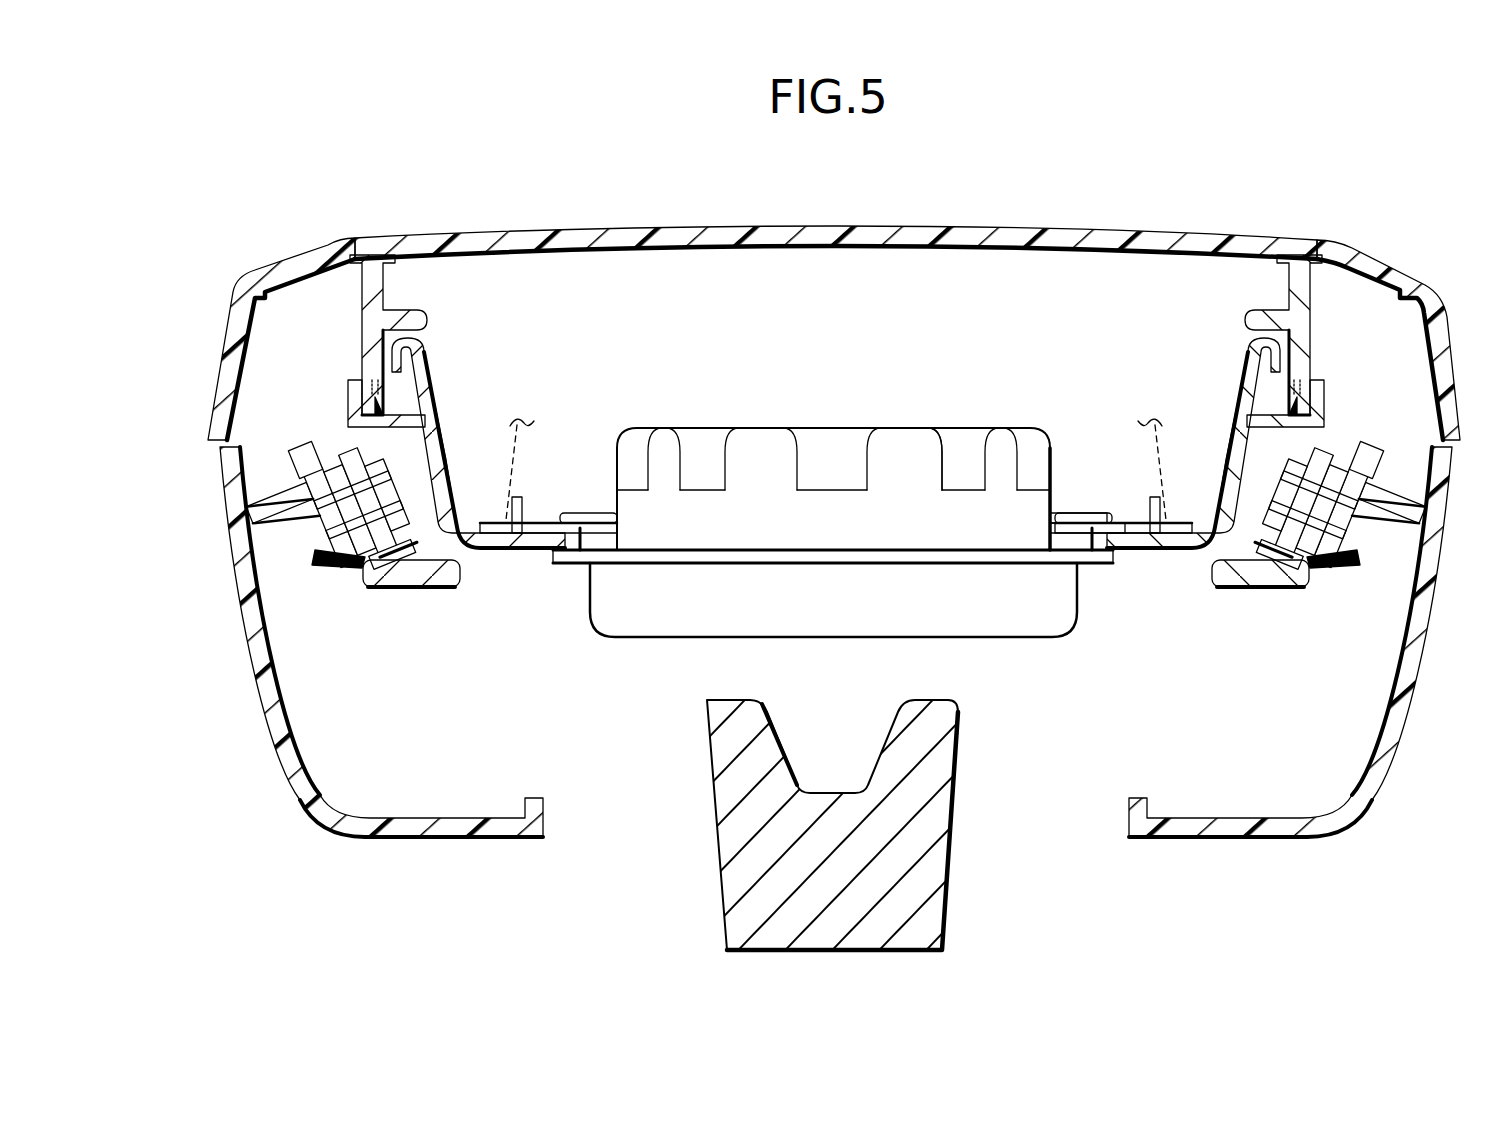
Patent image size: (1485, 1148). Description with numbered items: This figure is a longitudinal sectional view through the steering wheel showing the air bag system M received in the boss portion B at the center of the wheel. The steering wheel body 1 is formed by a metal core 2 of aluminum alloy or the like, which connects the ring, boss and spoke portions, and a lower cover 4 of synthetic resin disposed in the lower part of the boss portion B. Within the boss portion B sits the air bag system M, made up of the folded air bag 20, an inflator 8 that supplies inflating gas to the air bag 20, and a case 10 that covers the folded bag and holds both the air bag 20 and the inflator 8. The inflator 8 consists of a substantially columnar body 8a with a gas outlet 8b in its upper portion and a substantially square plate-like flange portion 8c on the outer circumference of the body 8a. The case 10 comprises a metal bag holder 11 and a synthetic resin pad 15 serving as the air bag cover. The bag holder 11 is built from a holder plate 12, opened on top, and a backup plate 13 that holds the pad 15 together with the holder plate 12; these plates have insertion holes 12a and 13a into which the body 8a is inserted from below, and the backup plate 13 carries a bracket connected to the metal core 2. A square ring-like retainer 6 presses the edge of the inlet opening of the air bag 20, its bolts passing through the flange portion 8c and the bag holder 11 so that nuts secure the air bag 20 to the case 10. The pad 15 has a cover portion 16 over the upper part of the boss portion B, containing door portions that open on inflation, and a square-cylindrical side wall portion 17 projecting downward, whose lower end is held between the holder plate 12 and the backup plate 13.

The steering wheel body 1 is at (1125, 918).
The metal core 2 is at (946, 866).
The lower cover 4 is at (1158, 840).
The retainer 6 is at (594, 512).
The inflator 8 is at (1053, 659).
The body 8a is at (900, 447).
The gas outlet 8b is at (837, 447).
The flange portion 8c is at (773, 580).
The case 10 is at (275, 180).
The bag holder 11 is at (333, 386).
The holder plate 12 is at (456, 500).
The insertion hole 12a is at (1075, 538).
The backup plate 13 is at (433, 565).
The insertion hole 13a is at (1063, 545).
The pad 15 is at (289, 256).
The cover portion 16 is at (679, 237).
The side wall portion 17 is at (378, 290).
The air bag 20 is at (512, 426).
The air bag system M is at (597, 665).
The boss portion B is at (517, 887).